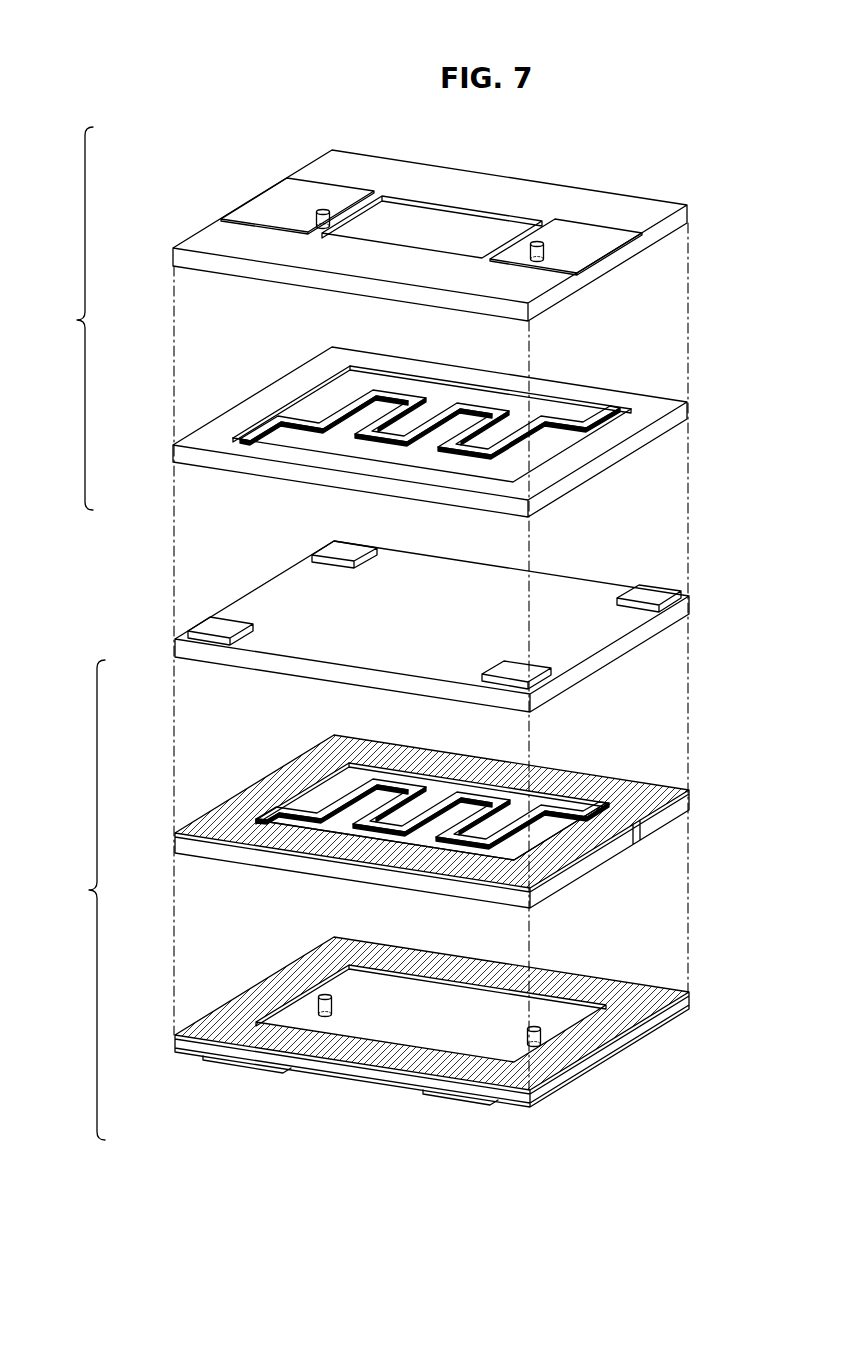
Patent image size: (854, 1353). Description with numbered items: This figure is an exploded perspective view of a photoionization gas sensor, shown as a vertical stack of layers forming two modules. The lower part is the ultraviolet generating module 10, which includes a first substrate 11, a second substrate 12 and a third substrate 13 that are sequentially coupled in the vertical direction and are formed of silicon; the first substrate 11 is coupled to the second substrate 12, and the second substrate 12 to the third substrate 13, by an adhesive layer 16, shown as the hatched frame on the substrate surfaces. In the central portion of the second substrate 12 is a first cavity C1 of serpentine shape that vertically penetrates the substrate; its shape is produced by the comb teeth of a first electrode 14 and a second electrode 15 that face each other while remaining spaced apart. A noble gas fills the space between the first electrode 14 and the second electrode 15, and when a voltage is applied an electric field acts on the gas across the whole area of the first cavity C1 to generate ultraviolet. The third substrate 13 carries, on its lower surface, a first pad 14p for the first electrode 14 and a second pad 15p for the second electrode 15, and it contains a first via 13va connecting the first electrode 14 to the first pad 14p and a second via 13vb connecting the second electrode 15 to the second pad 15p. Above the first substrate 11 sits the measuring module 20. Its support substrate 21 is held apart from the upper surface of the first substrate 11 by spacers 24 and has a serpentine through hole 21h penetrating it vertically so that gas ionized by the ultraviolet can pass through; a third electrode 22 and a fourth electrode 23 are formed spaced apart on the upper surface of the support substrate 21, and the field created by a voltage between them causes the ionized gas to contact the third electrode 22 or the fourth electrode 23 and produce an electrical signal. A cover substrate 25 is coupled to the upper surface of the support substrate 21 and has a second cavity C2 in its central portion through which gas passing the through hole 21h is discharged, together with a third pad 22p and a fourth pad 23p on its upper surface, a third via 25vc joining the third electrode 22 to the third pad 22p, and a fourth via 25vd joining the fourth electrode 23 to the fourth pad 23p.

The ultraviolet generating module 10 is at (77, 900).
The first substrate 11 is at (177, 647).
The second substrate 12 is at (180, 847).
The third substrate 13 is at (179, 1043).
The first via 13va is at (323, 994).
The second via 13vb is at (548, 1031).
The first electrode 14 is at (328, 795).
The first pad 14p is at (203, 1060).
The second electrode 15 is at (542, 828).
The second pad 15p is at (490, 1105).
The adhesive layer 16 is at (232, 806).
The measuring module 20 is at (68, 318).
The support substrate 21 is at (177, 451).
The through hole 21h is at (467, 426).
The third electrode 22 is at (324, 405).
The third pad 22p is at (277, 187).
The fourth electrode 23 is at (541, 441).
The fourth pad 23p is at (602, 235).
The spacer 24 is at (220, 614).
The cover substrate 25 is at (180, 257).
The third via 25vc is at (317, 214).
The fourth via 25vd is at (545, 251).
The first cavity C1 is at (467, 820).
The second cavity C2 is at (427, 224).